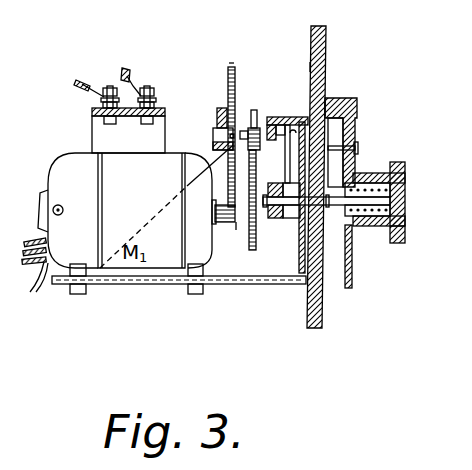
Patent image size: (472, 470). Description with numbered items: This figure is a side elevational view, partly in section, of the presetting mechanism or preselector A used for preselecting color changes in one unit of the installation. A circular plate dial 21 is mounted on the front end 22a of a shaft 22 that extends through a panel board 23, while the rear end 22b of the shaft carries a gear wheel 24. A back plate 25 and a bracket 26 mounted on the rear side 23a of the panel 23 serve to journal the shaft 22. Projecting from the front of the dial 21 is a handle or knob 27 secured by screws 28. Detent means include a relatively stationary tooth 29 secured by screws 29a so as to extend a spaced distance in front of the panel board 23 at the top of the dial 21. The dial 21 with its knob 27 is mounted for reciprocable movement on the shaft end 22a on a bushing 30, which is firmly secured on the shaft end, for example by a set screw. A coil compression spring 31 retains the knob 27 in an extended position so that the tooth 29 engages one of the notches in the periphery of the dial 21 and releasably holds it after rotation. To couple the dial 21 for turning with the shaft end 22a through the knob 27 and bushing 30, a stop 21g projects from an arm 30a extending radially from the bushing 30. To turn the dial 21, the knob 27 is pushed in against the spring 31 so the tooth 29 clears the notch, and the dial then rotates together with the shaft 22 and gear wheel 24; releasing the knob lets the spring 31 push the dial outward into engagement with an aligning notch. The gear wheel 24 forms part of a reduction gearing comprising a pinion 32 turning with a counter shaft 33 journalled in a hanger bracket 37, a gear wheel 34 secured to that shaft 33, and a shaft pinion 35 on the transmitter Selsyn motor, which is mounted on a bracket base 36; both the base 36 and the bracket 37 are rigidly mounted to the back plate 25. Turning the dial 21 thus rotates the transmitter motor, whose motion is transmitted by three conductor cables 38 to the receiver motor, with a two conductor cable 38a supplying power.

The circular plate dial 21 is at (353, 257).
The stop 21g is at (358, 147).
The shaft 22 is at (333, 218).
The front end of shaft 22a is at (405, 226).
The rear end of shaft 22b is at (238, 220).
The panel board 23 is at (317, 330).
The rear side of panel 23a is at (310, 66).
The gear wheel 24 is at (252, 252).
The back plate 25 is at (300, 256).
The bracket 26 is at (272, 222).
The knob 27 is at (393, 200).
The screws 28 is at (405, 165).
The tooth 29 is at (352, 110).
The screws 29a is at (327, 98).
The bushing 30 is at (406, 184).
The arm 30a is at (347, 181).
The coil compression spring 31 is at (363, 220).
The pinion 32 is at (250, 128).
The counter shaft 33 is at (258, 130).
The gear wheel 34 is at (230, 78).
The shaft pinion 35 is at (229, 224).
The bracket base 36 is at (146, 285).
The hanger bracket 37 is at (217, 108).
The three conductor cables 38 is at (33, 277).
The two conductor cable 38a is at (118, 72).
The preselector A is at (374, 111).